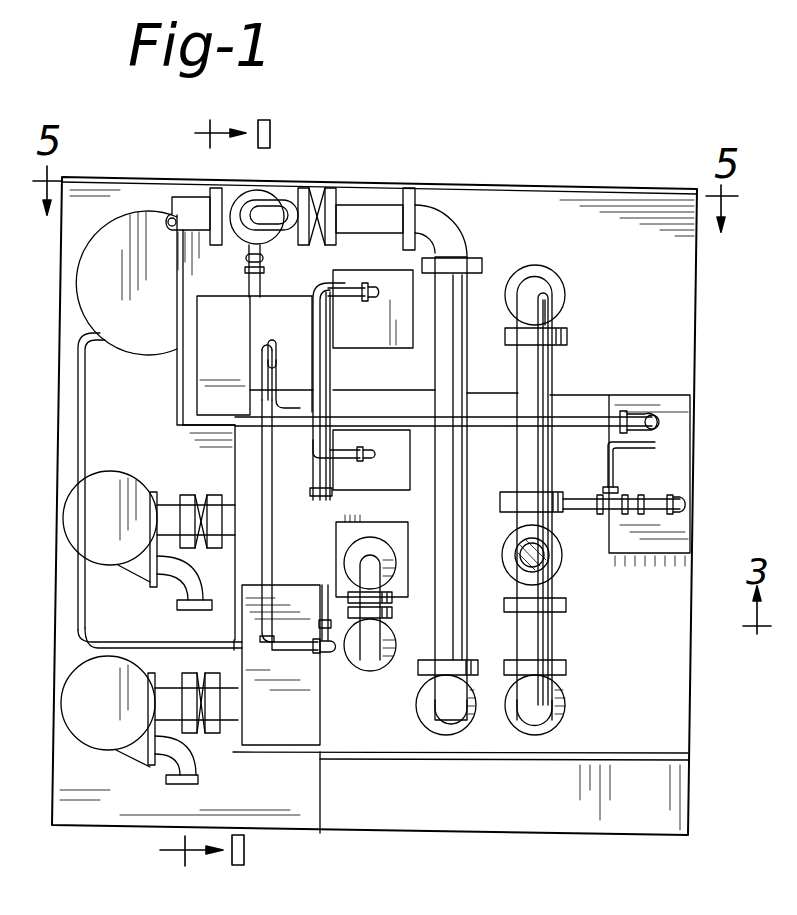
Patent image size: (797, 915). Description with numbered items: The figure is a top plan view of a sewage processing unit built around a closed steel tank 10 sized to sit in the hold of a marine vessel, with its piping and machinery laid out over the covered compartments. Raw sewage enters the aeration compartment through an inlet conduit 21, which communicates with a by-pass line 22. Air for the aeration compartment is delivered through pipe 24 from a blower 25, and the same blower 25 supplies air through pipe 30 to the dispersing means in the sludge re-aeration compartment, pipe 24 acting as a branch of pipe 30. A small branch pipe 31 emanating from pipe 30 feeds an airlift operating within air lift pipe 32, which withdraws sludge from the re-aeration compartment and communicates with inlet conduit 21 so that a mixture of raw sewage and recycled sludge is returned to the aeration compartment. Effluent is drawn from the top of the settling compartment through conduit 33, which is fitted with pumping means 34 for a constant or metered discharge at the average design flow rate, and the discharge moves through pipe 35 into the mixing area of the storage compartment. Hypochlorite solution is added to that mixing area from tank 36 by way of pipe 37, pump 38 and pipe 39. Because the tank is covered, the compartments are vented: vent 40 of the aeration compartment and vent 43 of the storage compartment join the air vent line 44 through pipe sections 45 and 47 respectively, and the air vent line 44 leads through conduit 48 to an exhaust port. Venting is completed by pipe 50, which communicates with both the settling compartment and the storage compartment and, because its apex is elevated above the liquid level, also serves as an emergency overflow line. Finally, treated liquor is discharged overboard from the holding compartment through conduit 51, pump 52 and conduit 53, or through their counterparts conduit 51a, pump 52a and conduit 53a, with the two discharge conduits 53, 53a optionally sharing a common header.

The tank 10 is at (574, 189).
The inlet conduit 21 is at (190, 198).
The by-pass line 22 is at (358, 213).
The pipe 24 is at (358, 282).
The blower 25 is at (178, 398).
The pipe 30 is at (688, 506).
The branch pipe 31 is at (615, 472).
The air lift pipe 32 is at (570, 424).
The conduit 33 is at (273, 388).
The pumping means 34 is at (235, 365).
The pipe 35 is at (270, 538).
The tank 36 is at (80, 292).
The pipe 37 is at (78, 425).
The pump 38 is at (278, 727).
The pipe 39 is at (325, 615).
The vent 40 is at (545, 292).
The vent 43 is at (524, 718).
The air vent line 44 is at (520, 452).
The pipe section 45 is at (552, 330).
The pipe section 47 is at (545, 690).
The conduit 48 is at (548, 560).
The pipe 50 is at (383, 612).
The conduit 51 is at (222, 735).
The conduit 51a is at (222, 548).
The pump 52 is at (92, 750).
The pump 52a is at (103, 562).
The conduit 53 is at (182, 784).
The conduit 53a is at (182, 603).